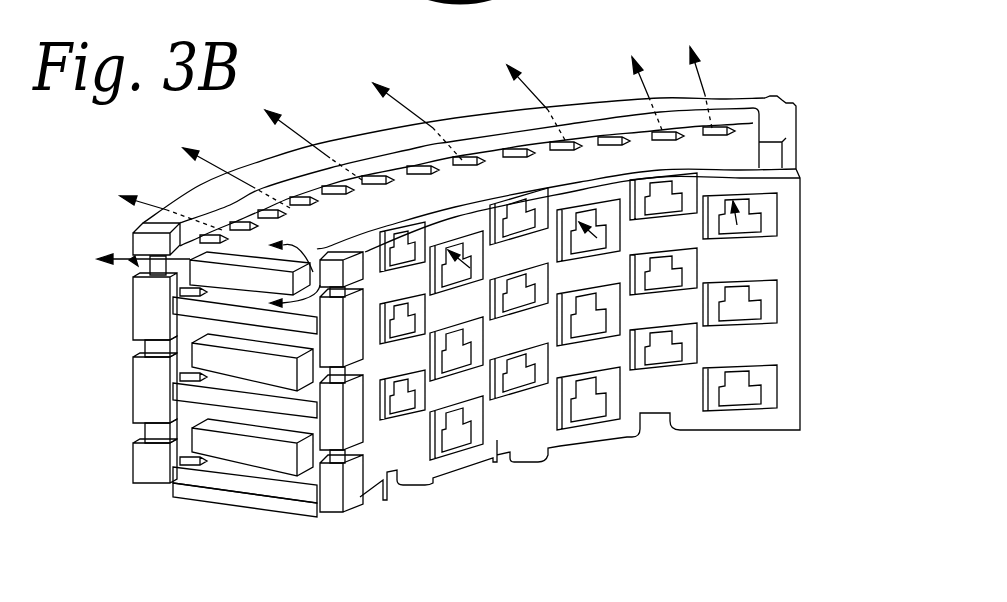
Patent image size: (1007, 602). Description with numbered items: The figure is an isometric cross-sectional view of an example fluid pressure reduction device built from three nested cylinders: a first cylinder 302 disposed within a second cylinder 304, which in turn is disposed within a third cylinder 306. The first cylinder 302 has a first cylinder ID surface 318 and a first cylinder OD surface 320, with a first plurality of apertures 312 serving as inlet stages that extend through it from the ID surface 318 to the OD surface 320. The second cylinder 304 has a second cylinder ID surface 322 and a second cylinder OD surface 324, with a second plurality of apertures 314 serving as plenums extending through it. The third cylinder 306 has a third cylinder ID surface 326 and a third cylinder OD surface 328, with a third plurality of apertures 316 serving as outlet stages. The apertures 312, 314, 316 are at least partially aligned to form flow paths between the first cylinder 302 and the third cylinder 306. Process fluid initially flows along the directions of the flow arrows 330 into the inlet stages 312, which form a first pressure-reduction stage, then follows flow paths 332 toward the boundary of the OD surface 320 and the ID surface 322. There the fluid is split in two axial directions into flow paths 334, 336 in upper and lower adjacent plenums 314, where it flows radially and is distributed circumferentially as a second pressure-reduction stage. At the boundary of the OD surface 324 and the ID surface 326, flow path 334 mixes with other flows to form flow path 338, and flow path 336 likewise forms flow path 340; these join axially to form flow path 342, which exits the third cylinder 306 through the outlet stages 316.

The first cylinder 302 is at (778, 165).
The second cylinder 304 is at (745, 147).
The third cylinder 306 is at (745, 97).
The first plurality of apertures 312 is at (730, 367).
The second plurality of apertures 314 is at (303, 477).
The third plurality of apertures 316 is at (147, 428).
The first cylinder ID surface 318 is at (365, 500).
The first cylinder OD surface 320 is at (318, 500).
The second cylinder ID surface 322 is at (330, 463).
The second cylinder OD surface 324 is at (173, 486).
The third cylinder ID surface 326 is at (180, 460).
The third cylinder OD surface 328 is at (133, 447).
The flow arrows 330 is at (737, 225).
The flow paths 332 is at (356, 290).
The flow path 334 is at (320, 228).
The flow path 336 is at (303, 315).
The flow path 338 is at (225, 250).
The flow path 340 is at (200, 278).
The flow path 342 is at (133, 259).